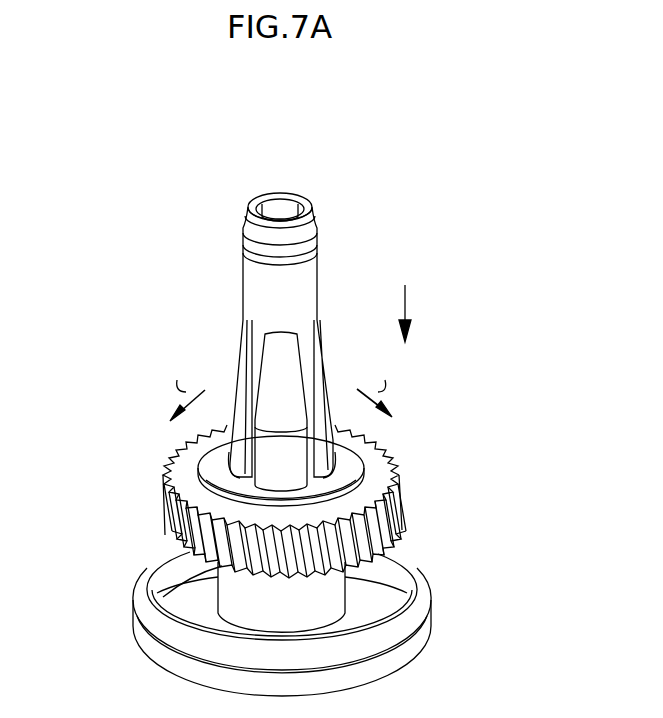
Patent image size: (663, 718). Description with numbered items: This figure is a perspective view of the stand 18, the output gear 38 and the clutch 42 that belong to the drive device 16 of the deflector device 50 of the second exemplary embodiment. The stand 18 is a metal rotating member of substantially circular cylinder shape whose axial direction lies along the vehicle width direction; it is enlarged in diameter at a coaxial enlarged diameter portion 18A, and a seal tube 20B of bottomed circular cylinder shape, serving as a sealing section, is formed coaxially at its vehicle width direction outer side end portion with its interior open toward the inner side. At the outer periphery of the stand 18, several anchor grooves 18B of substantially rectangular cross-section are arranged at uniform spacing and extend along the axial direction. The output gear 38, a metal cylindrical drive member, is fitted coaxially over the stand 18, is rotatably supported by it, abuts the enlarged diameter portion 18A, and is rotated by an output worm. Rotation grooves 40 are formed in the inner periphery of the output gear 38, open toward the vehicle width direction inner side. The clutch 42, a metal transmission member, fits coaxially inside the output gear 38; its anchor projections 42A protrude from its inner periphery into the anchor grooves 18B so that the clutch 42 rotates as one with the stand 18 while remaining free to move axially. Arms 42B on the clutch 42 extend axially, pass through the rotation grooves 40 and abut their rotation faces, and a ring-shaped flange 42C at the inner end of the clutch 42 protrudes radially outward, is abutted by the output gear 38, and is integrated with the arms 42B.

The drive device 16 is at (282, 437).
The deflector device 50 is at (282, 444).
The stand 18 is at (249, 412).
The enlarged diameter portion 18A is at (190, 586).
The anchor grooves 18B is at (252, 447).
The seal tube 20B is at (408, 572).
The output gear 38 is at (165, 492).
The rotation grooves 40 is at (170, 518).
The clutch 42 is at (278, 494).
The anchor projections 42A is at (360, 432).
The arms 42B is at (375, 505).
The flange 42C is at (392, 455).